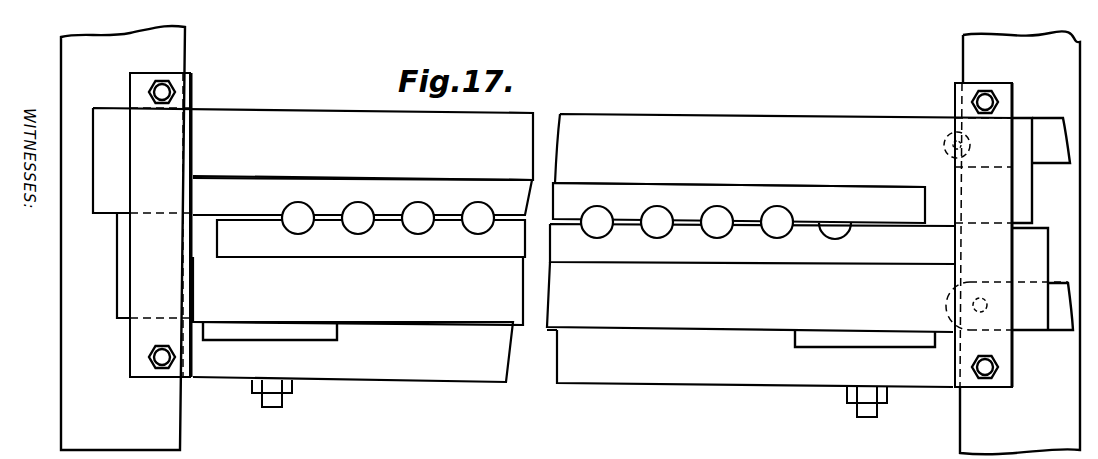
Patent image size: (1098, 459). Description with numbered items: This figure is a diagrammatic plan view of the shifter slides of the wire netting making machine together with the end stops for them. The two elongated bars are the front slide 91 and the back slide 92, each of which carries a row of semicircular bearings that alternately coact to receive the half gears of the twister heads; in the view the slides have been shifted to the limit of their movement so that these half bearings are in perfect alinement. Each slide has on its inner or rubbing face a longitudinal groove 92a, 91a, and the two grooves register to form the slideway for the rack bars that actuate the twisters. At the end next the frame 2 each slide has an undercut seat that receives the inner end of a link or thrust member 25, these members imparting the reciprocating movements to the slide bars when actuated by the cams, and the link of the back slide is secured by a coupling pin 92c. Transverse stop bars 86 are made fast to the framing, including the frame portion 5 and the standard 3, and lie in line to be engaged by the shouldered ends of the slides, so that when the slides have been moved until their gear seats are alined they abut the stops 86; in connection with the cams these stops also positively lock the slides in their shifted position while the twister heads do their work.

The frame 2 is at (123, 238).
The right standard 3 is at (1020, 242).
The frame portion 5 is at (573, 369).
The link or thrust member 25 is at (1052, 152).
The stop bar 86 is at (599, 230).
The front slide 91 is at (535, 280).
The longitudinal groove 91a is at (586, 233).
The back slide 92 is at (562, 165).
The longitudinal groove 92a is at (559, 200).
The coupling pin 92c is at (957, 140).